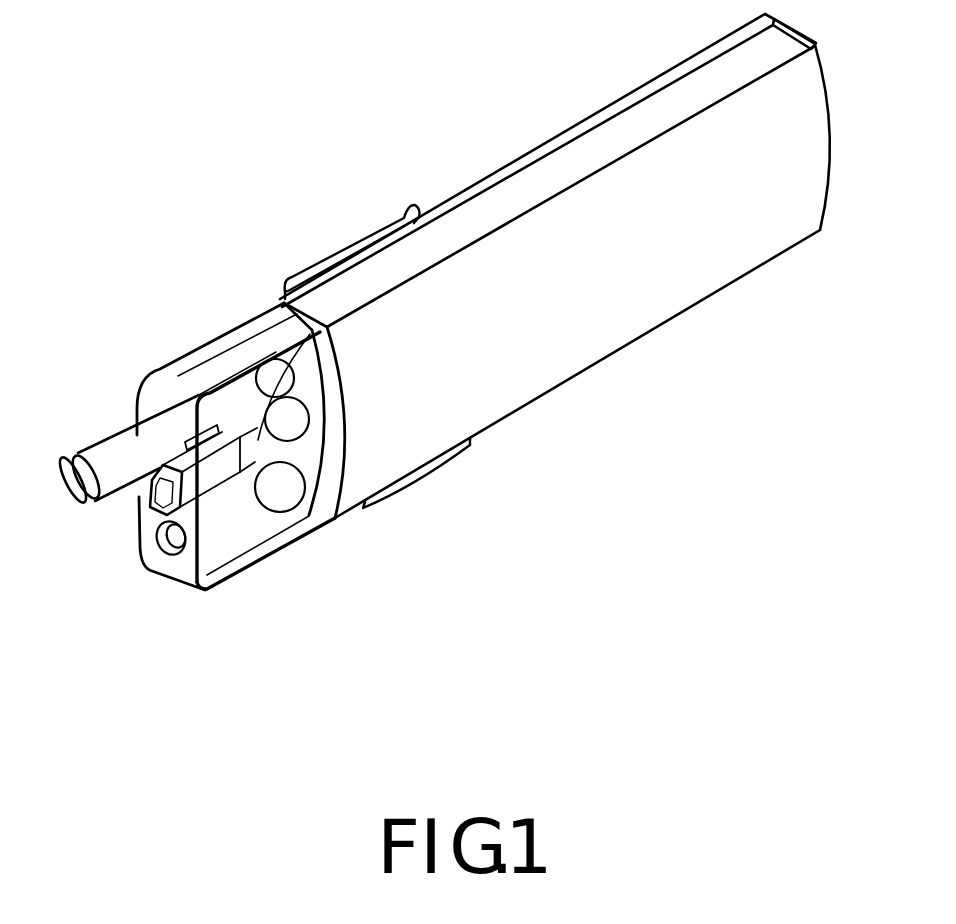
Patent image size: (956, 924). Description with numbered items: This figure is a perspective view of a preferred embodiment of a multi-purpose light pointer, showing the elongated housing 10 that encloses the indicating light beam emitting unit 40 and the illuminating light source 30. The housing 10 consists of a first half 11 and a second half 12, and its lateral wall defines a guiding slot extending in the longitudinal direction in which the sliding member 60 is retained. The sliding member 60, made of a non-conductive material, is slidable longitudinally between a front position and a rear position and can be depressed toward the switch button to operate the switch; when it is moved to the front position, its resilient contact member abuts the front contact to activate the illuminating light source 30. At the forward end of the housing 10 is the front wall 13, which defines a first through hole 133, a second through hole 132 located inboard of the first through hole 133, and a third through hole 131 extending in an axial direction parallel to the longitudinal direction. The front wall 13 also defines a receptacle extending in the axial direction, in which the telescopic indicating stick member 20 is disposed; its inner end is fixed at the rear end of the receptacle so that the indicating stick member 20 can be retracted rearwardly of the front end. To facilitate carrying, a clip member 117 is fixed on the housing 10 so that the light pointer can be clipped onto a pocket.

The housing 10 is at (555, 266).
The first half 11 is at (529, 154).
The second half 12 is at (665, 310).
The clip member 117 is at (303, 272).
The front wall 13 is at (138, 541).
The third through hole 131 is at (183, 400).
The second through hole 132 is at (160, 487).
The first through hole 133 is at (168, 560).
The telescopic indicating stick member 20 is at (100, 423).
The illuminating light source 30 is at (256, 455).
The indicating light beam emitting unit 40 is at (279, 497).
The sliding member 60 is at (415, 494).